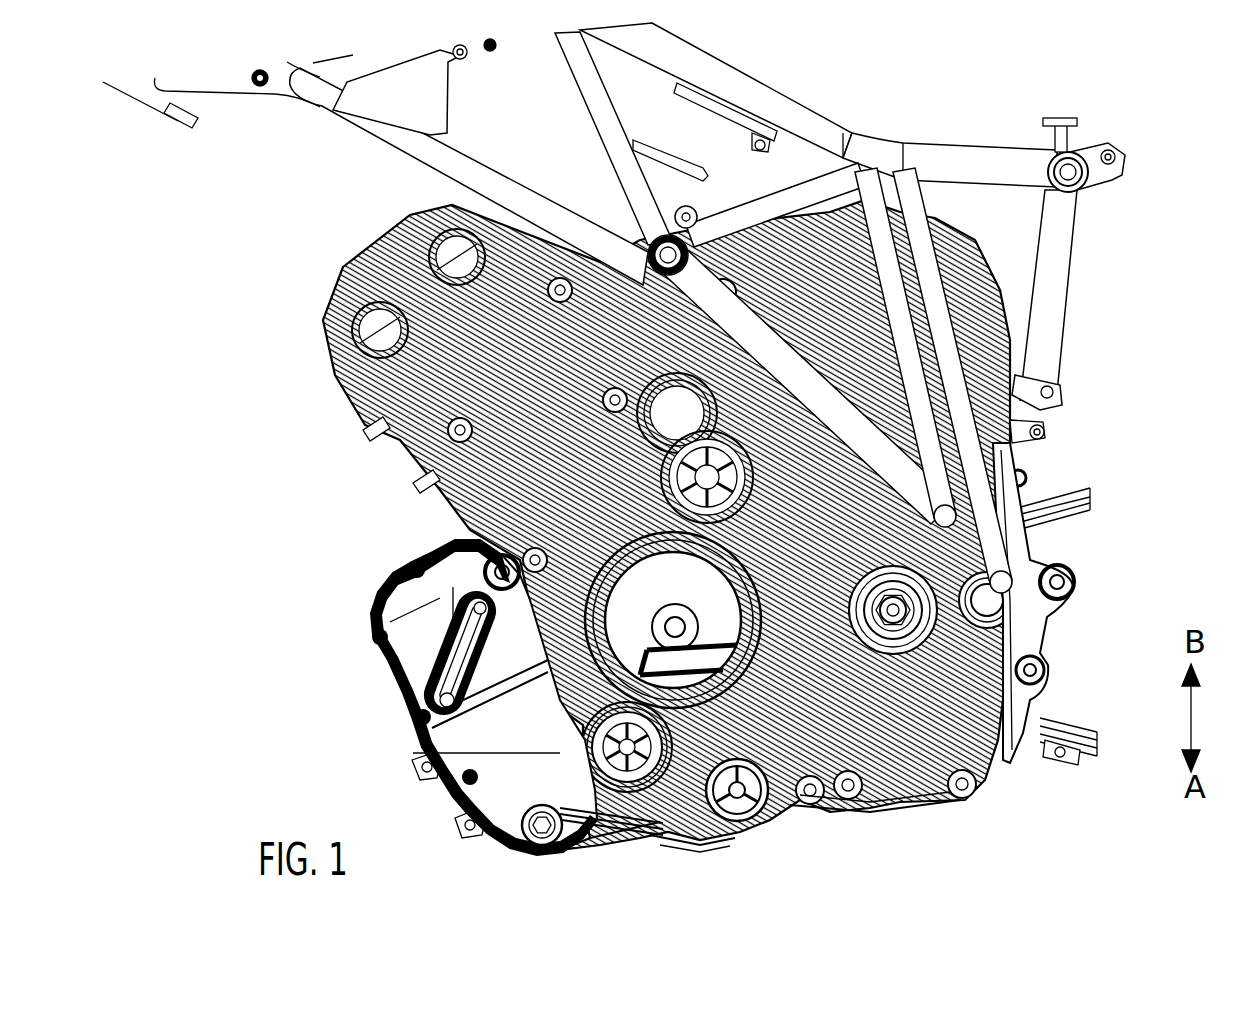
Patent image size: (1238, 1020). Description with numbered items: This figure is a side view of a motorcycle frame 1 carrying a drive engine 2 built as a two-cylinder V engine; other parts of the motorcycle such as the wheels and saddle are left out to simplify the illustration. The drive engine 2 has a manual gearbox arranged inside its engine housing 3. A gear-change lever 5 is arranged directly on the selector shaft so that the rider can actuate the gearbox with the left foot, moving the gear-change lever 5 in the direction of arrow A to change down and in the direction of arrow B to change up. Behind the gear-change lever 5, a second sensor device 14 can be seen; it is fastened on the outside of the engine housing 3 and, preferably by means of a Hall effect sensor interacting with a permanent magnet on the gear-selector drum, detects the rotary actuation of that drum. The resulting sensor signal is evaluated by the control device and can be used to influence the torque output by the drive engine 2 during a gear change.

The motorcycle frame 1 is at (785, 110).
The drive engine 2 is at (315, 509).
The engine housing 3 is at (680, 845).
The gear-change lever 5 is at (985, 762).
The second sensor device 14 is at (875, 812).